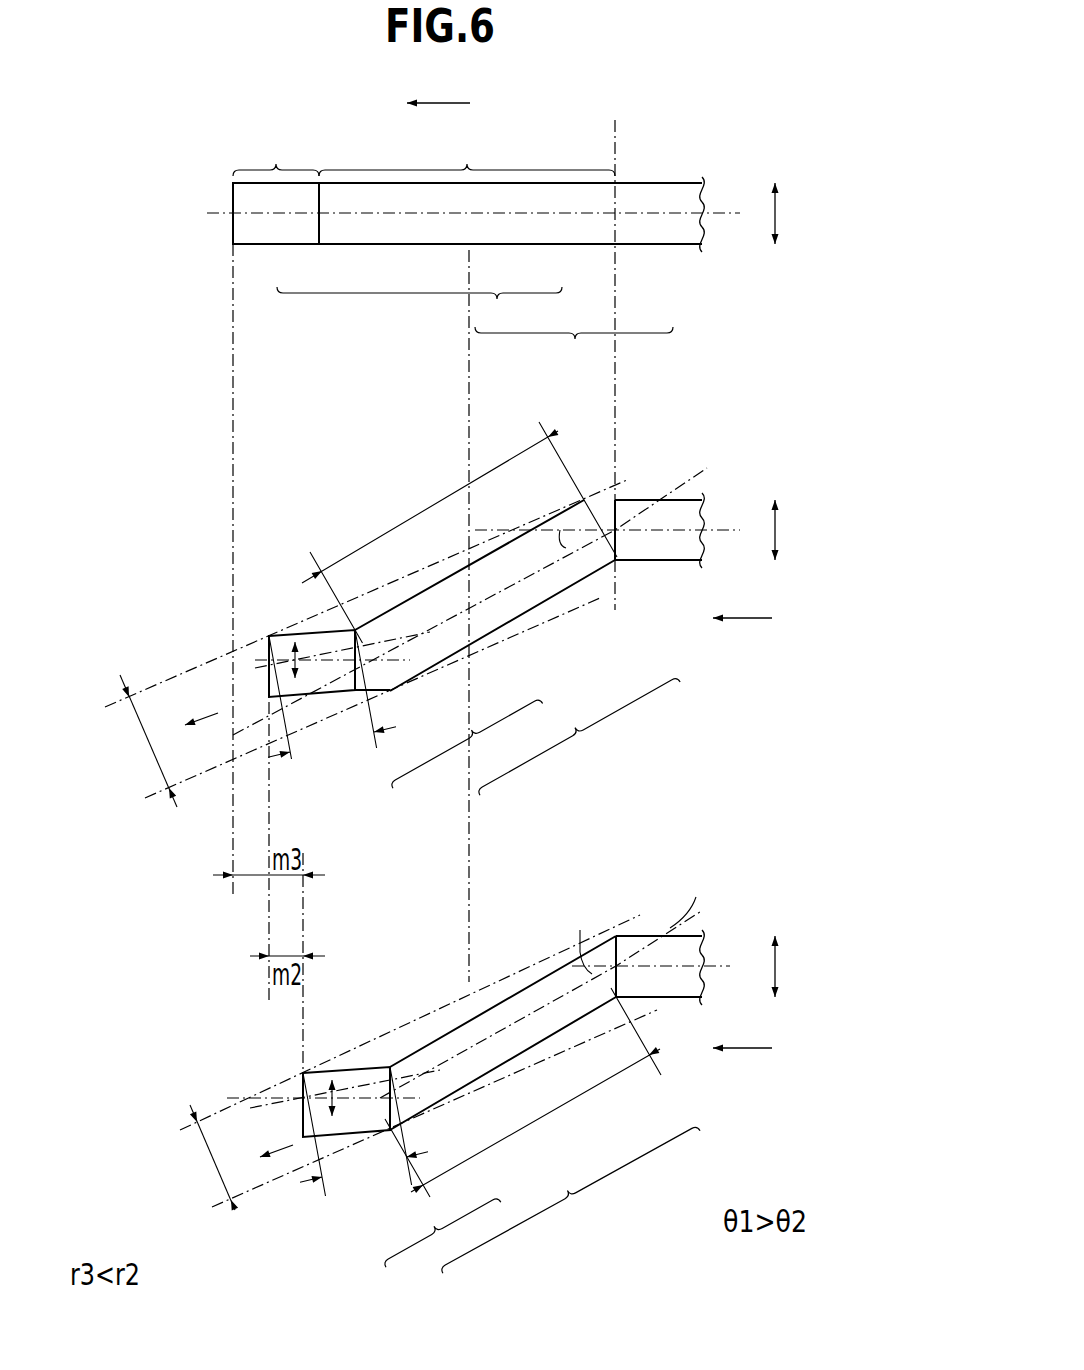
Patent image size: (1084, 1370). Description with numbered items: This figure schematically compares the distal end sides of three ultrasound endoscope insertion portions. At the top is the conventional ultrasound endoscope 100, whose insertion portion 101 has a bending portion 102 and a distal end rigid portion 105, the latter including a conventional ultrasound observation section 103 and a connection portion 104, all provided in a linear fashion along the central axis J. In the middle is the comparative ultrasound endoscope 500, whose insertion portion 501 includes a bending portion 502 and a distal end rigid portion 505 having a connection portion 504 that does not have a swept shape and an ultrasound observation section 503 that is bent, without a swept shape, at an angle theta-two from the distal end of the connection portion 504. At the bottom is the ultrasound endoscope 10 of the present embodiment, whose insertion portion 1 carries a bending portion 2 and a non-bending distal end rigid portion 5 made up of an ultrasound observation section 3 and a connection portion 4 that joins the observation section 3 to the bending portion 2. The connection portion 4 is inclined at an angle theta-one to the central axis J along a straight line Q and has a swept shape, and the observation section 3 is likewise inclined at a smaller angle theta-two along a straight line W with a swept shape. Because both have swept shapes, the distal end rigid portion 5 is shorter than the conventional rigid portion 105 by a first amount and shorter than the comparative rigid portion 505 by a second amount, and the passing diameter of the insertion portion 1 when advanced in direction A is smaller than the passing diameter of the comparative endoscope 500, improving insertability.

The ultrasound endoscope 100 is at (628, 165).
The insertion portion 101 is at (574, 350).
The bending portion 102 is at (657, 240).
The ultrasound observation section 103 is at (305, 235).
The connection portion 104 is at (540, 235).
The distal end rigid portion 105 is at (419, 311).
The ultrasound endoscope 500 is at (633, 485).
The insertion portion 501 is at (577, 734).
The bending portion 502 is at (658, 553).
The ultrasound observation section 503 is at (338, 688).
The connection portion 504 is at (511, 620).
The distal end rigid portion 505 is at (465, 740).
The ultrasound endoscope 10 is at (632, 920).
The insertion portion 1 is at (568, 1196).
The bending portion 2 is at (690, 987).
The ultrasound observation section 3 is at (380, 1125).
The connection portion 4 is at (472, 1085).
The distal end rigid portion 5 is at (440, 1230).